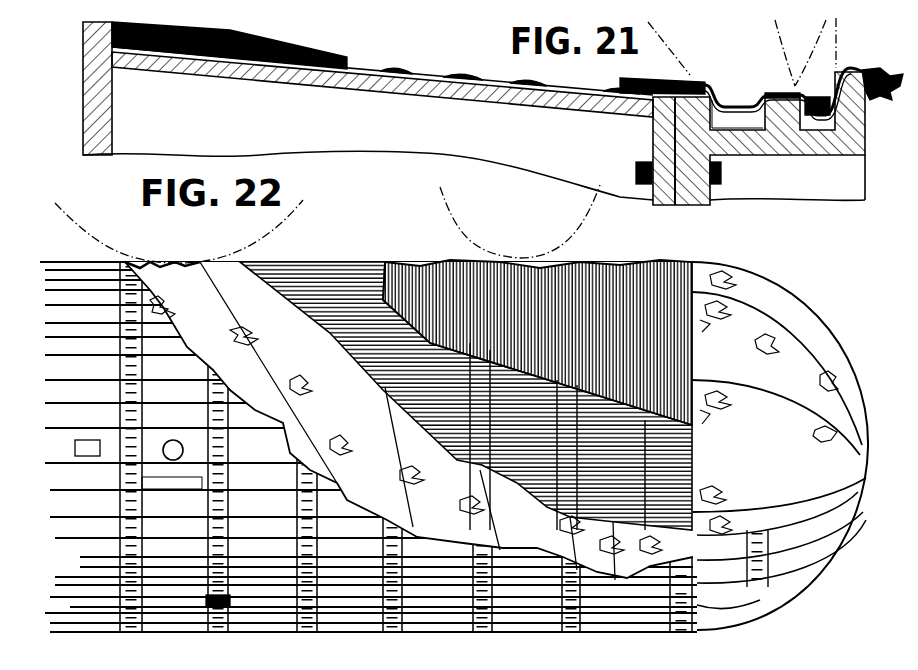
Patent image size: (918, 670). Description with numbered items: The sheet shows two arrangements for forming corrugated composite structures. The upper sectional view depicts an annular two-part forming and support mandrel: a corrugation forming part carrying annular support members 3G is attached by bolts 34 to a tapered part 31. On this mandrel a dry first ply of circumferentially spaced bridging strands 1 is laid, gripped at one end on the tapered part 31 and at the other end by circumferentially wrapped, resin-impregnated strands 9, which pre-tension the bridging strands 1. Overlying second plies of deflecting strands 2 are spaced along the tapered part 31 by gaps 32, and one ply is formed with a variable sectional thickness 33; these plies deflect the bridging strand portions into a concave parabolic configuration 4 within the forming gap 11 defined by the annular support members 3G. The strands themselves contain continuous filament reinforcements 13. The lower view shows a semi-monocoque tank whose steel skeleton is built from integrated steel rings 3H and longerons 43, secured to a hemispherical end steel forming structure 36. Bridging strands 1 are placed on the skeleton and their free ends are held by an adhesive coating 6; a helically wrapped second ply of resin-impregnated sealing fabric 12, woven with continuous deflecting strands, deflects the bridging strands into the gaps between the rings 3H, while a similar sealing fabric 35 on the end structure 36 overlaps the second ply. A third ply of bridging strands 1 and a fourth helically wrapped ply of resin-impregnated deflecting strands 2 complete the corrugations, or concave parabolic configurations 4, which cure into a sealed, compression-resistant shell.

In FIG. 21, the bridging strands 1 is at (172, 52).
In FIG. 22, the bridging strands 1 is at (352, 272).
In FIG. 21, the deflecting strands 2 is at (742, 92).
In FIG. 22, the deflecting strands 2 is at (438, 292).
In FIG. 21, the annular support members 3G is at (728, 122).
In FIG. 22, the steel rings 3H is at (466, 558).
In FIG. 21, the concave parabolic configuration 4 is at (690, 76).
In FIG. 22, the concave parabolic configuration 4 is at (112, 262).
In FIG. 22, the adhesive coating 6 is at (695, 612).
In FIG. 21, the circumferentially wrapped resin-impregnated strands 9 is at (812, 104).
In FIG. 21, the forming gap 11 is at (810, 150).
In FIG. 22, the sealing fabric 12 is at (178, 284).
In FIG. 21, the continuous filament reinforcements 13 is at (866, 98).
In FIG. 21, the tapered part 31 is at (262, 78).
In FIG. 21, the gaps 32 is at (472, 60).
In FIG. 21, the variable sectional thickness 33 is at (228, 30).
In FIG. 21, the bolts 34 is at (636, 184).
In FIG. 22, the resin-impregnated sealing fabric 35 is at (792, 322).
In FIG. 22, the hemispherical end steel forming structures 36 is at (820, 568).
In FIG. 22, the longerons 43 is at (246, 572).